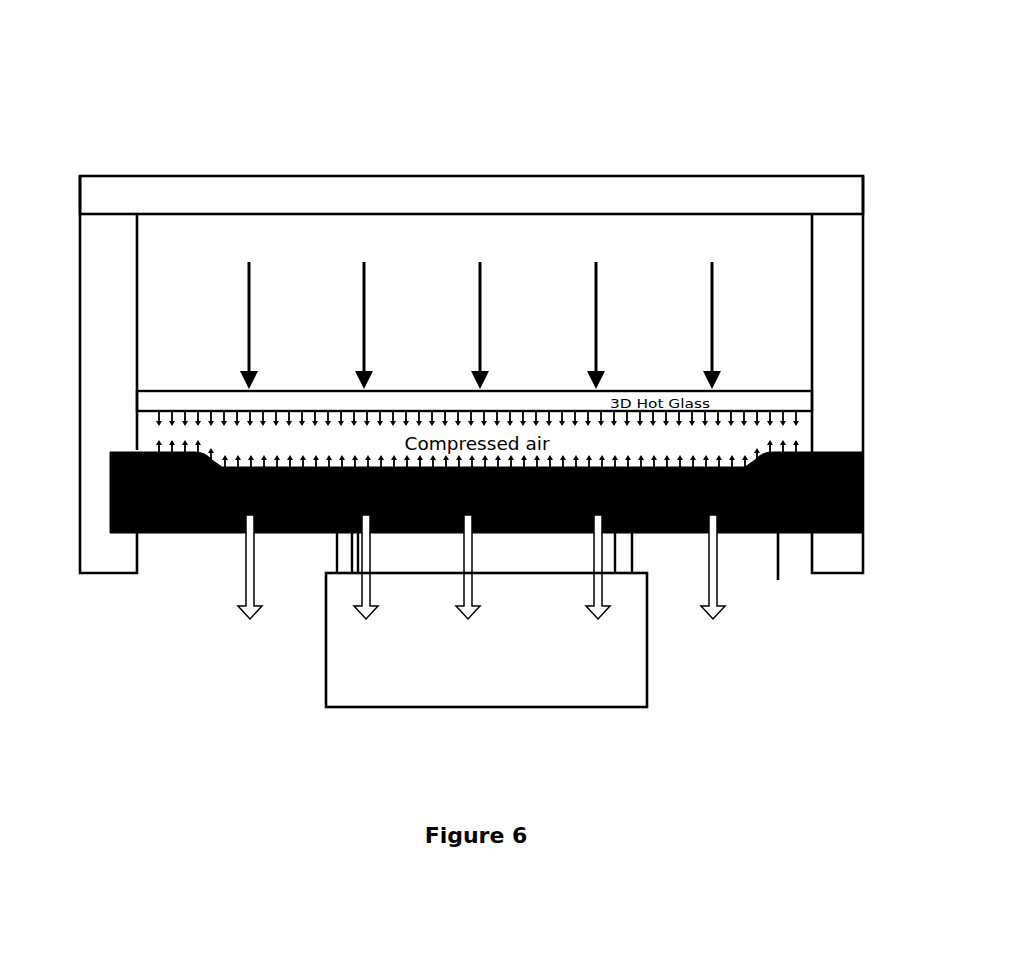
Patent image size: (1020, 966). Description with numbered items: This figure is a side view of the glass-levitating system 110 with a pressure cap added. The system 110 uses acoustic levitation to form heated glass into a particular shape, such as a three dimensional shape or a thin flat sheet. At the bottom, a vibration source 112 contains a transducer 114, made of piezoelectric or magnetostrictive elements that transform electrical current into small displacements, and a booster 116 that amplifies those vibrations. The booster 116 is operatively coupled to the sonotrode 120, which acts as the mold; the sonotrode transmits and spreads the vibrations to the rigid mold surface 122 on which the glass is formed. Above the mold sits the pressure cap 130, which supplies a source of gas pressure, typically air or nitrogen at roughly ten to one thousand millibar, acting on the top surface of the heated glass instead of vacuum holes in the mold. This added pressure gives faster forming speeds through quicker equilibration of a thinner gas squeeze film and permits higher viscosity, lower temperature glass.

The system 110 is at (477, 146).
The pressure cap 130 is at (703, 190).
The rigid surface 122 is at (152, 454).
The sonotrode 120 is at (779, 570).
The booster 116 is at (620, 553).
The vibration source 112 is at (660, 600).
The transducer 114 is at (610, 687).